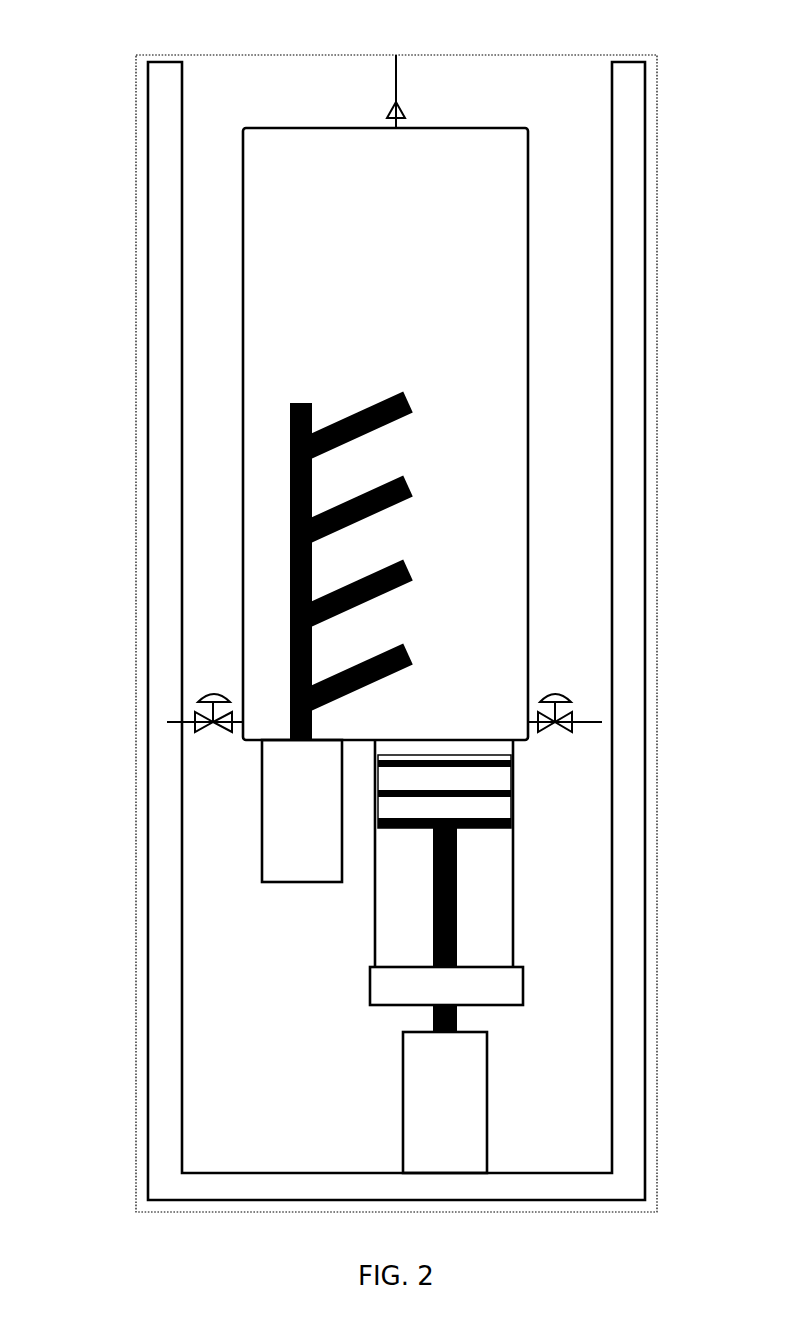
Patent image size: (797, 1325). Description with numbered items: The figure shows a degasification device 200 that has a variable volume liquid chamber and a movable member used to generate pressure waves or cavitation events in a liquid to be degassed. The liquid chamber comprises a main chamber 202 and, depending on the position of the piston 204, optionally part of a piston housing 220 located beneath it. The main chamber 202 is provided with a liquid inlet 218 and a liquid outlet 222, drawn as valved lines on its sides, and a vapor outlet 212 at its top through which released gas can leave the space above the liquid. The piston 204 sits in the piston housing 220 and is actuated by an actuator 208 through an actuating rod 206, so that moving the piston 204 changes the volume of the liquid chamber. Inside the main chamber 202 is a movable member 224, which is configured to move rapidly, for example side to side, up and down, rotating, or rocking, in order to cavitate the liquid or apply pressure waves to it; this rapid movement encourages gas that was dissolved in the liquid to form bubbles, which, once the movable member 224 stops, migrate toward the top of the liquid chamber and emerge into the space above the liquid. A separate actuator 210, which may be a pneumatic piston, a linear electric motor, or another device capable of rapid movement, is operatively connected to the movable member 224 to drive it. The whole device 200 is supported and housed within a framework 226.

The degasification device 200 is at (350, 611).
The main chamber 202 is at (292, 255).
The piston 204 is at (492, 780).
The actuating rod 206 is at (465, 925).
The actuator 208 is at (477, 1102).
The actuator 210 is at (272, 882).
The vapor outlet 212 is at (382, 93).
The liquid inlet 218 is at (578, 705).
The piston housing 220 is at (372, 898).
The liquid outlet 222 is at (192, 705).
The movable member 224 is at (288, 485).
The framework 226 is at (396, 631).